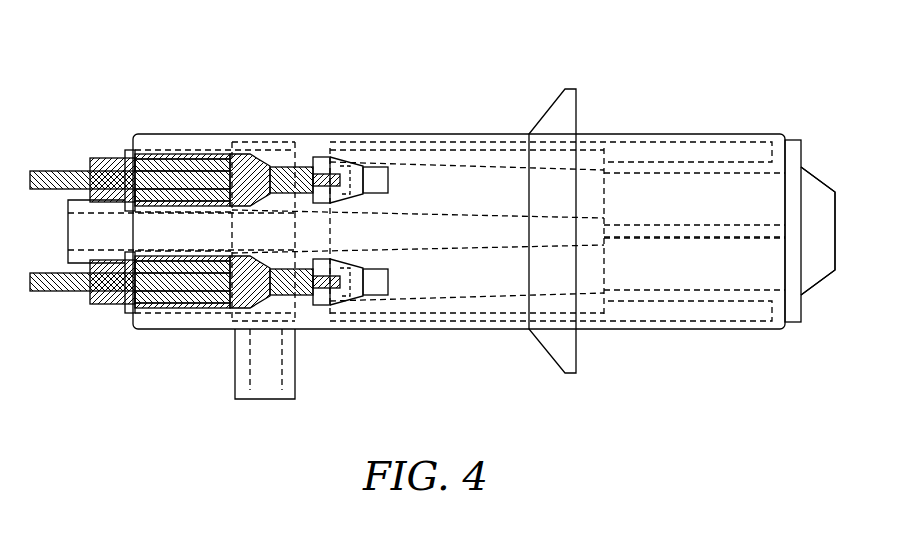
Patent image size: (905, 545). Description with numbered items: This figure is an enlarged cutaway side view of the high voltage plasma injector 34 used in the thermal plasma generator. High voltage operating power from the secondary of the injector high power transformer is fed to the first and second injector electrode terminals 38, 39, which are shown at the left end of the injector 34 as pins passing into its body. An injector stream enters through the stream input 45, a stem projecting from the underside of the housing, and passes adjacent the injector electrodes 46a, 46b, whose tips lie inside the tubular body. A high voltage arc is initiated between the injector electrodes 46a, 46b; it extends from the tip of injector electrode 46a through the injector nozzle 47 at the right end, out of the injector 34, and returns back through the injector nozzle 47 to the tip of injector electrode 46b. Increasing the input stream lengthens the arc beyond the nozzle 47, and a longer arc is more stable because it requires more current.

The injector 34 is at (282, 70).
The first injector electrode terminal 38 is at (50, 170).
The second injector electrode terminal 39 is at (58, 292).
The stream input 45 is at (235, 366).
The injector electrode 46a is at (375, 178).
The injector electrode 46b is at (373, 282).
The injector nozzle 47 is at (815, 181).